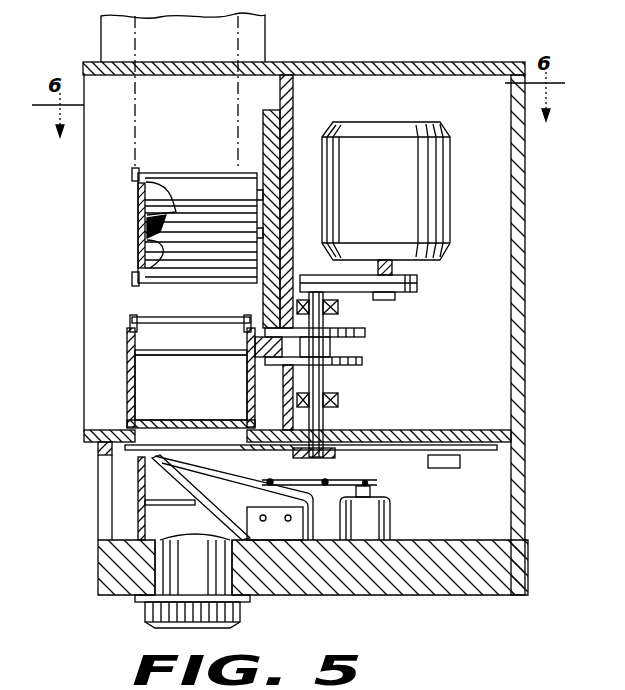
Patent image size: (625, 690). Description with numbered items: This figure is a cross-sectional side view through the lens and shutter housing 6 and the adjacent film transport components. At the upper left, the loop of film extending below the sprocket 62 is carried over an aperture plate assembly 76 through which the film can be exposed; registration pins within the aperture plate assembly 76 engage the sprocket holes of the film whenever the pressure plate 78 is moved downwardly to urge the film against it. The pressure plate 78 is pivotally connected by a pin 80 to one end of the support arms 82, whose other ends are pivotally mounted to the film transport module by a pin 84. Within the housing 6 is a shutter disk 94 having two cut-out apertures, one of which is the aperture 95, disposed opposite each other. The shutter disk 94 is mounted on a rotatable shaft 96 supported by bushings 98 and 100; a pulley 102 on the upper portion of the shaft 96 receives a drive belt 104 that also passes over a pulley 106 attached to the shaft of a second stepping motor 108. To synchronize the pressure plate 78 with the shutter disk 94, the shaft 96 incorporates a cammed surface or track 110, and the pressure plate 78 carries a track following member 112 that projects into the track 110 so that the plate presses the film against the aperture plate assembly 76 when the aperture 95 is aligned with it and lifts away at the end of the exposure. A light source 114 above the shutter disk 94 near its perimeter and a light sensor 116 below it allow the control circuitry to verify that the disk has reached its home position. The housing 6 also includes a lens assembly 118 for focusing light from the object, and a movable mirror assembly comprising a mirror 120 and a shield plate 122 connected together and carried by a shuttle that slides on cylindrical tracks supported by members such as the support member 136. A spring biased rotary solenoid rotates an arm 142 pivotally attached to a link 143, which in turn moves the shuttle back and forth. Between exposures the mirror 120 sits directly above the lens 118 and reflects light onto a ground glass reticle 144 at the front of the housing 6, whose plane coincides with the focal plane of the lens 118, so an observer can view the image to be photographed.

The lens and shutter housing 6 is at (526, 505).
The sprocket 62 is at (137, 222).
The aperture plate assembly 76 is at (122, 435).
The pressure plate 78 is at (133, 420).
The pin 80 is at (187, 355).
The support arms 82 is at (247, 330).
The pin 84 is at (193, 320).
The shutter disk 94 is at (476, 452).
The aperture 95 is at (214, 450).
The rotatable shaft 96 is at (322, 386).
The bushing 98 is at (338, 306).
The bushing 100 is at (337, 405).
The pulley 102 is at (318, 275).
The drive belt 104 is at (350, 300).
The pulley 106 is at (416, 295).
The second stepping motor 108 is at (450, 150).
The cammed surface or track 110 is at (367, 362).
The track following member 112 is at (283, 365).
The light source 114 is at (440, 432).
The light sensor 116 is at (442, 466).
The lens assembly 118 is at (243, 606).
The mirror 120 is at (216, 519).
The shield plate 122 is at (138, 470).
The support member 136 is at (282, 527).
The arm 142 is at (376, 483).
The link 143 is at (322, 478).
The ground glass reticle 144 is at (106, 517).